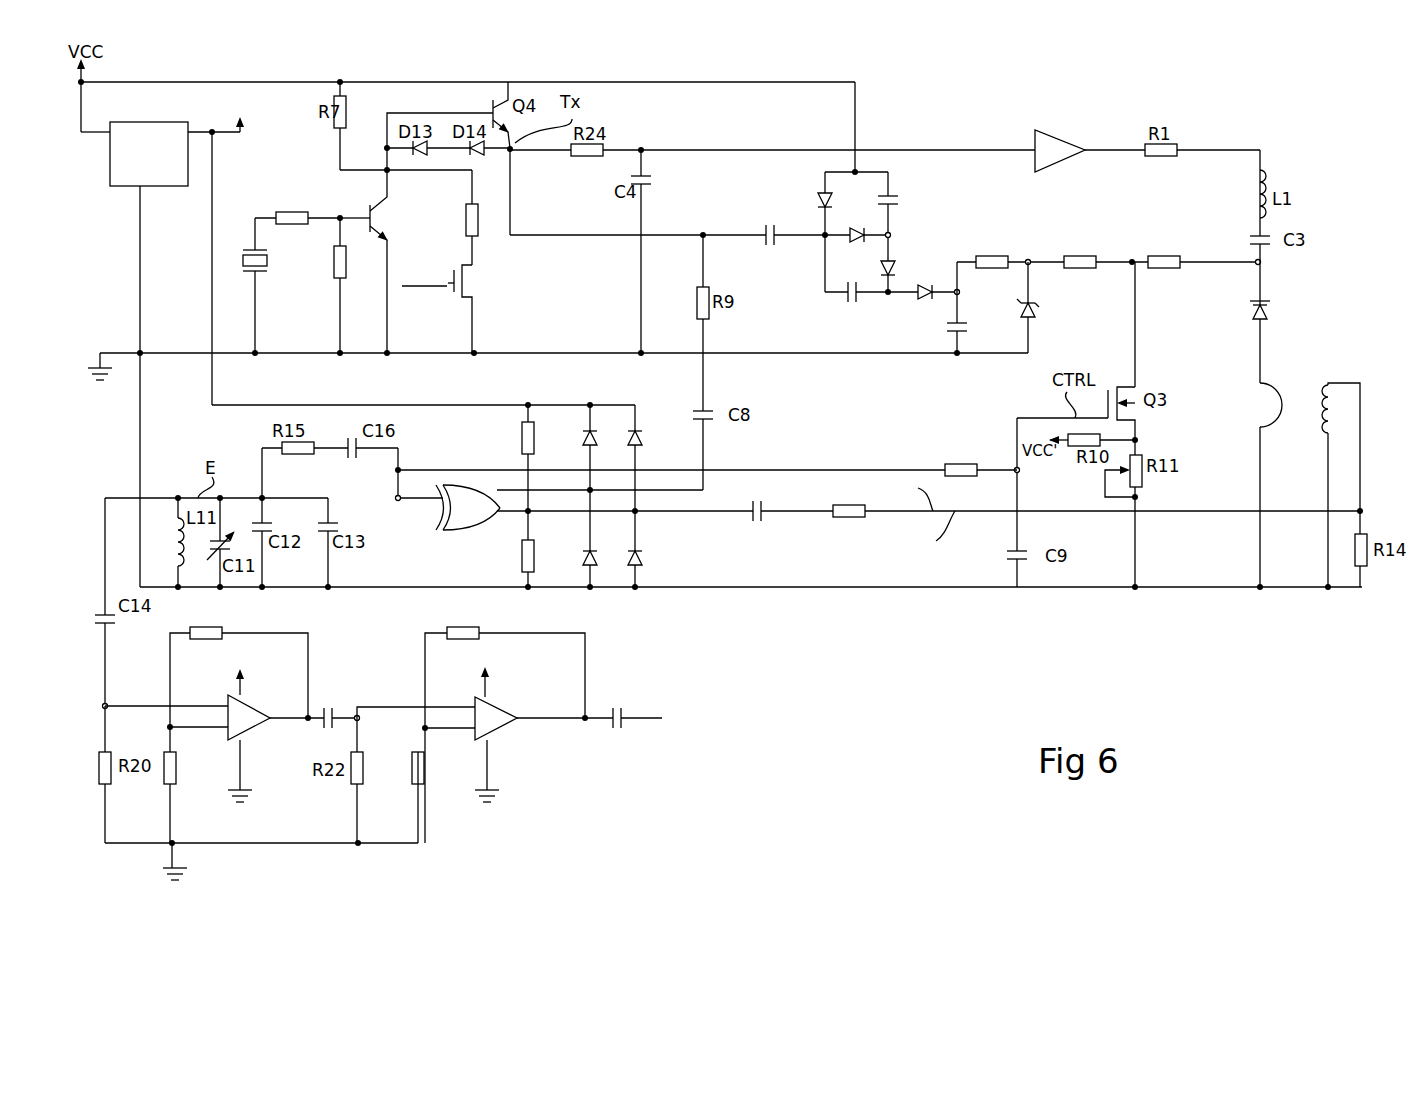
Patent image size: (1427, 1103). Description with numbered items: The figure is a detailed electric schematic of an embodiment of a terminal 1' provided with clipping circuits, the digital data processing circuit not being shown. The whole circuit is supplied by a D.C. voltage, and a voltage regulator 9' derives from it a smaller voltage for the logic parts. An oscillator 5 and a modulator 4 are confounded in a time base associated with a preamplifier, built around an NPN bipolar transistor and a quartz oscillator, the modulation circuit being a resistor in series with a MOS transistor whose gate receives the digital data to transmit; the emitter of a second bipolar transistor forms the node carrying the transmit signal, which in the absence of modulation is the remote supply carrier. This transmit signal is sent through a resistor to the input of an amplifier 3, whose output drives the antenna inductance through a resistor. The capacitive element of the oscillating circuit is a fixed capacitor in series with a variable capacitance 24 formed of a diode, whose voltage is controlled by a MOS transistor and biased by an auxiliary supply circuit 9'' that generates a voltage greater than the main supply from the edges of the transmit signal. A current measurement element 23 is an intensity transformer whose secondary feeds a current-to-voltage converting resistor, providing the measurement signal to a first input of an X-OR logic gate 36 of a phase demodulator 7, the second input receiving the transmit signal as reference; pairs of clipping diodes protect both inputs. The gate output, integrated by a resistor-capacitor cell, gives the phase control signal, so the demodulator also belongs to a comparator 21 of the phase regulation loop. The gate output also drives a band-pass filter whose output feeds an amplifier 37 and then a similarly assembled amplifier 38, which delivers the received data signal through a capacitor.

The voltage regulator 9' is at (163, 342).
The oscillator 5 is at (318, 196).
The modulator 4 is at (516, 290).
The auxiliary supply circuit 9'' is at (997, 217).
The amplifier 3 is at (1066, 132).
The variable capacitance 24 is at (1280, 302).
The element of current measurement 23 is at (1344, 364).
The comparator 21 is at (948, 418).
The X-OR logic gate 36 is at (462, 515).
The phase demodulator 7 is at (612, 600).
The amplifier 37 is at (250, 700).
The amplifier 38 is at (495, 700).
The terminal 1' is at (1163, 683).